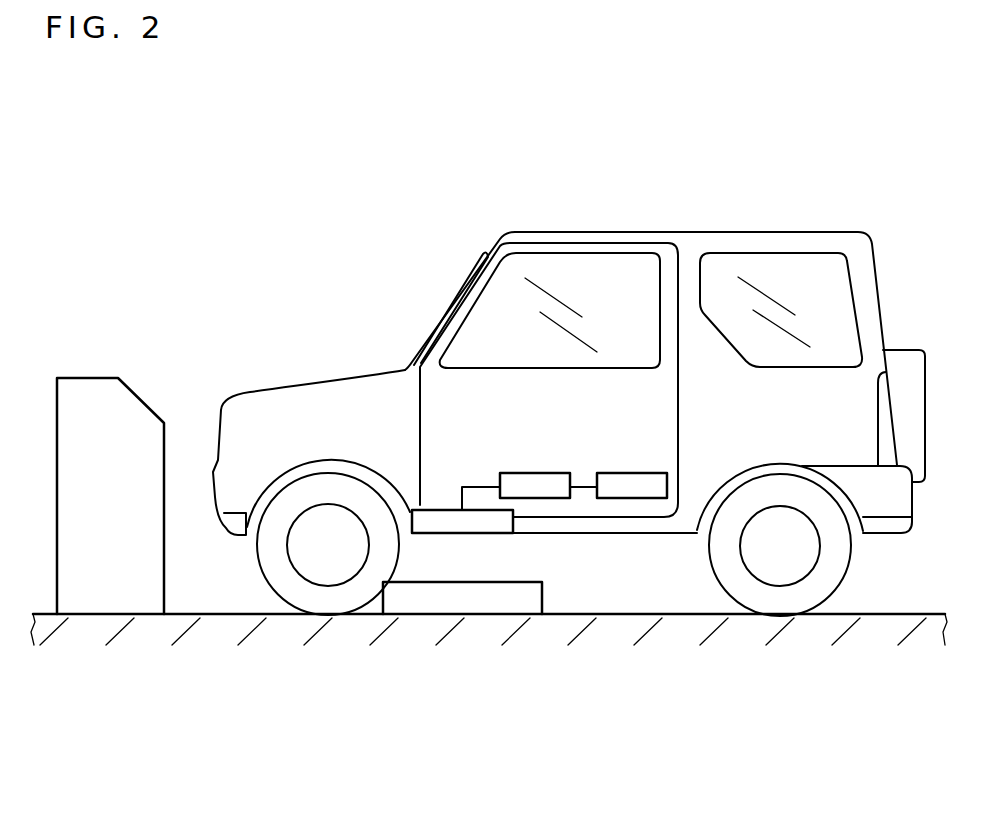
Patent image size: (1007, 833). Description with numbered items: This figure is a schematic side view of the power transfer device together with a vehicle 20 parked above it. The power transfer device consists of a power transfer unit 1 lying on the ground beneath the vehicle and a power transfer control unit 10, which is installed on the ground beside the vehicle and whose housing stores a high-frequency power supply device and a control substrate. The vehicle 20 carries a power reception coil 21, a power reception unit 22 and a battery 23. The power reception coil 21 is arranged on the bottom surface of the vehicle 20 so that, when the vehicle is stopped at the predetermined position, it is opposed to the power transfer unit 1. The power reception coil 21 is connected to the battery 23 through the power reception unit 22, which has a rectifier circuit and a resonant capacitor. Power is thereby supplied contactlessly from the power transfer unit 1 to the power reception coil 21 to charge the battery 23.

The power transfer unit 1 is at (417, 603).
The power transfer control unit 10 is at (92, 377).
The vehicle 20 is at (569, 414).
The power reception coil 21 is at (480, 520).
The power reception unit 22 is at (548, 490).
The battery 23 is at (618, 490).